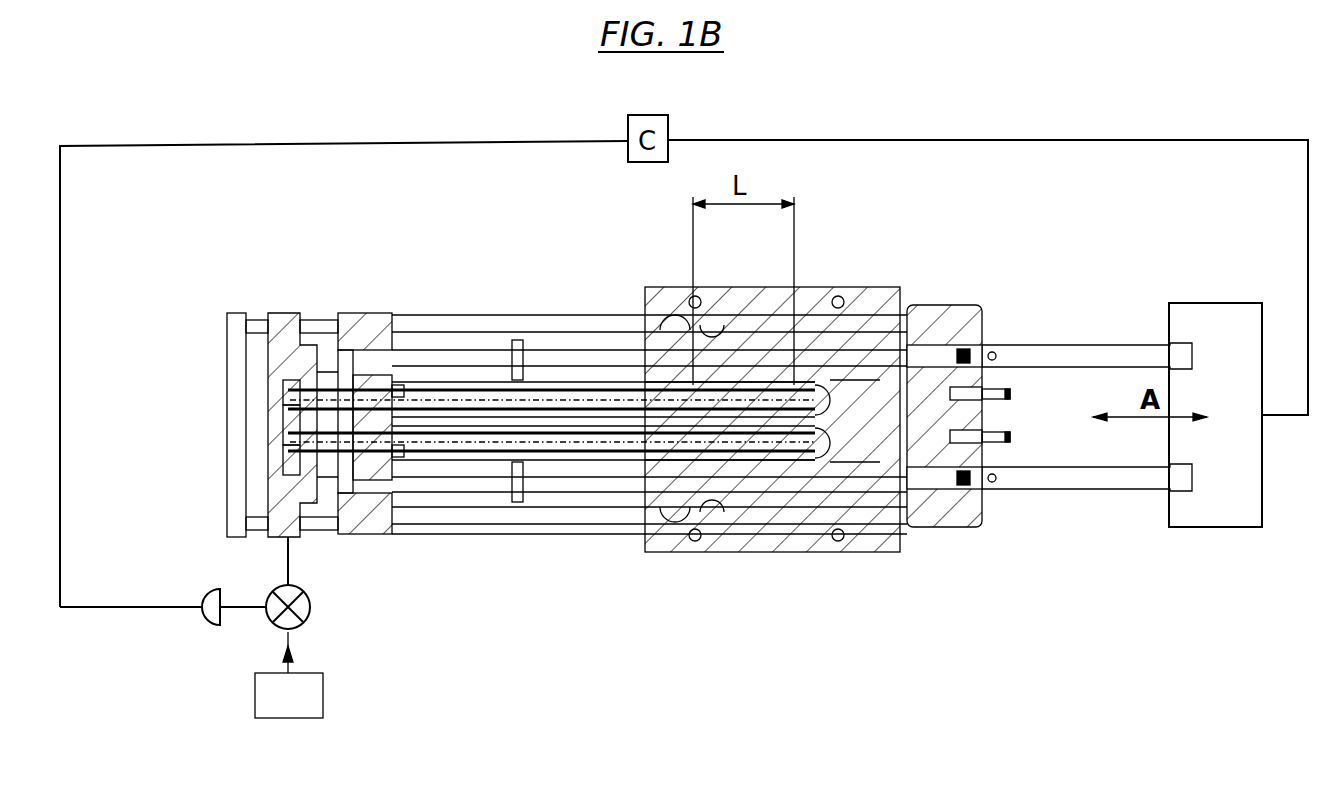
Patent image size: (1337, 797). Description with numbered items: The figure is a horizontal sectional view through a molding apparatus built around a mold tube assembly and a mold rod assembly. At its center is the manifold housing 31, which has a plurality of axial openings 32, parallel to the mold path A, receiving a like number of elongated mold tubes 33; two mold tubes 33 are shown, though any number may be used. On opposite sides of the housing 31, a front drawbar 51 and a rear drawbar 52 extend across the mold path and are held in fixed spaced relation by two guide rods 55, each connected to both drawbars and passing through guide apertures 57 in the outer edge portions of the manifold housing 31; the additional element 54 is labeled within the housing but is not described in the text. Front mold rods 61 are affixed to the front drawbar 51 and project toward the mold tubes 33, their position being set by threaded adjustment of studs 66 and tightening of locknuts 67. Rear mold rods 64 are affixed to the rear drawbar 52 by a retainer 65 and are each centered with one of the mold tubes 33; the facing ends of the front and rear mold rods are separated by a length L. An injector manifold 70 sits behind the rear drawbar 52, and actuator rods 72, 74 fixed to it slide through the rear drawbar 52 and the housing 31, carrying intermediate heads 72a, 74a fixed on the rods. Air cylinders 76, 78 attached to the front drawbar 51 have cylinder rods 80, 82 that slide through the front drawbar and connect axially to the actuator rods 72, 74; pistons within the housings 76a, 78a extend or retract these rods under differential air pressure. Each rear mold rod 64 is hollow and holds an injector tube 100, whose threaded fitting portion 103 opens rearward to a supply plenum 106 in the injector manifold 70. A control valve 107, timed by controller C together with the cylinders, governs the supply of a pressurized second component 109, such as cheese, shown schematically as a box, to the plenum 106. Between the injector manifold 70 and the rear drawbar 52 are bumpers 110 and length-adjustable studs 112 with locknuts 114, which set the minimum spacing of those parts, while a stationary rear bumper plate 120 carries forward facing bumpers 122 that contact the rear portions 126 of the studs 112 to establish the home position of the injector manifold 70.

The manifold housing 31 is at (807, 552).
The axial openings 32 is at (890, 385).
The mold tubes 33 is at (750, 385).
The front drawbar 51 is at (983, 320).
The rear drawbar 52 is at (378, 330).
The coil spring 54 is at (673, 325).
The guide rods 55 is at (476, 333).
The guide apertures 57 is at (757, 380).
The front mold rods 61 is at (917, 380).
The rear mold rods 64 is at (443, 388).
The retainer 65 is at (403, 525).
The studs 66 is at (1003, 396).
The locknuts 67 is at (990, 408).
The injector manifold 70 is at (283, 313).
The actuator rod 72 is at (540, 358).
The intermediate head 72a is at (518, 340).
The actuator rod 74 is at (543, 483).
The intermediate head 74a is at (513, 490).
The air cylinder 76 is at (1077, 343).
The housing 76a is at (1162, 370).
The air cylinder 78 is at (1075, 488).
The housing 78a is at (1162, 465).
The cylinder rod 80 is at (937, 355).
The cylinder rod 82 is at (943, 493).
The injector tube 100 is at (414, 470).
The threaded fitting portion 103 is at (302, 392).
The supply plenum 106 is at (282, 440).
The control valve 107 is at (300, 628).
The second component 109 is at (282, 468).
The bumpers 110 is at (334, 313).
The length-adjustable studs 112 is at (326, 313).
The locknuts 114 is at (318, 313).
The rear bumper plate 120 is at (223, 517).
The forward facing bumpers 122 is at (252, 313).
The rear portions 126 is at (262, 313).